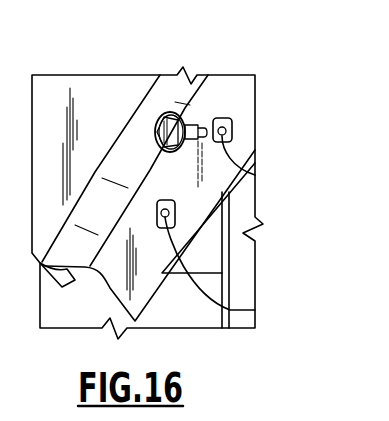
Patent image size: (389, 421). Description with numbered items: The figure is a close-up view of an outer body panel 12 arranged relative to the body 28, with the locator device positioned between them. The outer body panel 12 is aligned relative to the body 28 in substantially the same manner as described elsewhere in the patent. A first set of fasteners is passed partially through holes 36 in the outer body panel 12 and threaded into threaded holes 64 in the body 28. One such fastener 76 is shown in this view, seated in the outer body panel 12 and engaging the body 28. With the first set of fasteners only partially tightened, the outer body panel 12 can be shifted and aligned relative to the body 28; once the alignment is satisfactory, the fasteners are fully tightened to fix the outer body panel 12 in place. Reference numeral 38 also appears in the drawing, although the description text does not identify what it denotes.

The outer body panel 12 is at (238, 95).
The body 28 is at (176, 256).
The holes 36 is at (233, 130).
The wire 38 is at (255, 310).
The threaded holes 64 is at (255, 175).
The fastener 76 is at (170, 94).